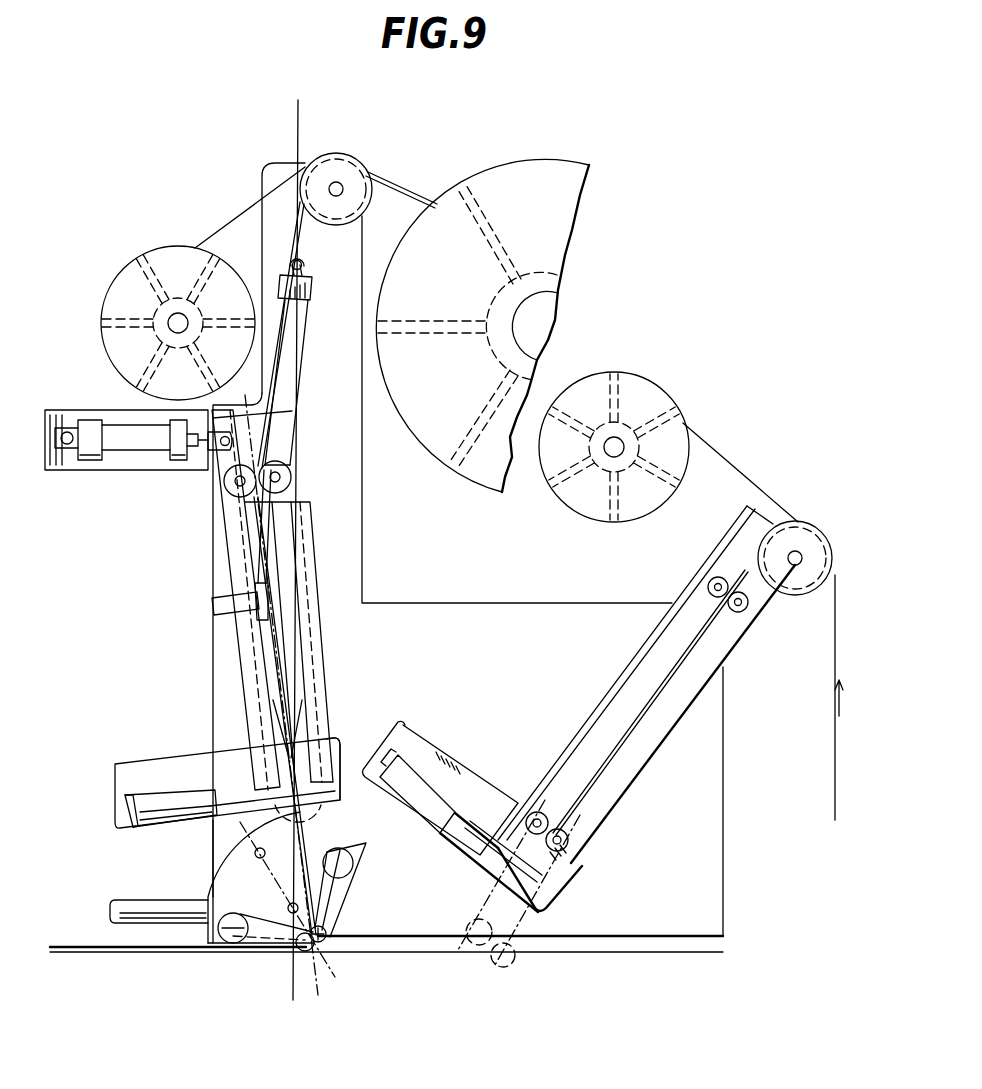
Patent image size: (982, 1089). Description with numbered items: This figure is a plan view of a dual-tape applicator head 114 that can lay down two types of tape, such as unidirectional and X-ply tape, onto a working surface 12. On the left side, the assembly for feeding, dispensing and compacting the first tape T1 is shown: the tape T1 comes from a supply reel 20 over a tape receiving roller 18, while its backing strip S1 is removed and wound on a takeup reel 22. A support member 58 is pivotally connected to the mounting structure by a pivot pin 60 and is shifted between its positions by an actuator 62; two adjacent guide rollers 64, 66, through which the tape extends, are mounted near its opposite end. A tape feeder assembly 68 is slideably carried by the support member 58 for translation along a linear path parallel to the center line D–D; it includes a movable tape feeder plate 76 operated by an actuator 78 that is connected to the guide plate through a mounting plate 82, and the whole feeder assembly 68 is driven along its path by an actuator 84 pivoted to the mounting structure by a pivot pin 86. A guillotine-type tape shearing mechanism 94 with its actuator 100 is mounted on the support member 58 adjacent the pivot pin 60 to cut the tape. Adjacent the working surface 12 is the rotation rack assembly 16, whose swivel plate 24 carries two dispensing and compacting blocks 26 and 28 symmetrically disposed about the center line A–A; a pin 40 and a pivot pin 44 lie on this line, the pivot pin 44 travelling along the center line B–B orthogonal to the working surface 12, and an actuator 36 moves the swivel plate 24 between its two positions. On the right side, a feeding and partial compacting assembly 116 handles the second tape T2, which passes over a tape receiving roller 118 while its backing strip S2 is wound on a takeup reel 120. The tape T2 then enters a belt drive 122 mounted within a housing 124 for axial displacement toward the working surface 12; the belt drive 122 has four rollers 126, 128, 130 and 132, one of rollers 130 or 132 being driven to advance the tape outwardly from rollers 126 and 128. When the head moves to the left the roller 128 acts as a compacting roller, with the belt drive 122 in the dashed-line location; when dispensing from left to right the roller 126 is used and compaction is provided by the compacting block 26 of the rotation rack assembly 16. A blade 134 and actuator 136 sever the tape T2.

The working surface 12 is at (592, 947).
The rotation rack assembly 16 is at (215, 864).
The tape receiving roller 18 is at (335, 153).
The supply reel 20 is at (583, 197).
The takeup reel 22 is at (160, 250).
The swivel plate 24 is at (235, 880).
The dispensing and compacting block 26 is at (230, 944).
The dispensing and compacting block 28 is at (352, 870).
The actuator 36 is at (135, 920).
The pin 40 is at (252, 853).
The pivot pin 44 is at (287, 908).
The support member 58 is at (300, 544).
The pivot pin 60 is at (330, 810).
The actuator 62 is at (122, 445).
The guide roller 64 is at (228, 488).
The guide roller 66 is at (292, 477).
The tape feeder assembly 68 is at (282, 605).
The tape feeder plate 76 is at (245, 668).
The actuator 78 is at (215, 626).
The mounting plate 82 is at (253, 590).
The actuator 84 is at (290, 347).
The pivot pin 86 is at (302, 262).
The tape shearing mechanism 94 is at (338, 770).
The actuator 100 is at (140, 792).
The applicator head 114 is at (358, 553).
The feeding and partial compacting assembly 116 is at (700, 712).
The tape receiving roller 118 is at (806, 520).
The takeup reel 120 is at (660, 380).
The belt drive 122 is at (650, 650).
The housing 124 is at (622, 675).
The roller 126 is at (535, 810).
The roller 128 is at (570, 838).
The roller 130 is at (712, 578).
The roller 132 is at (744, 610).
The blade 134 is at (555, 890).
The actuator 136 is at (440, 835).
The center line A- A is at (290, 900).
The center line B- B is at (304, 557).
The center line D- D is at (280, 691).
The backing strip S1 is at (232, 220).
The backing strip S2 is at (722, 455).
The tape T1 is at (405, 195).
The tape T2 is at (815, 762).